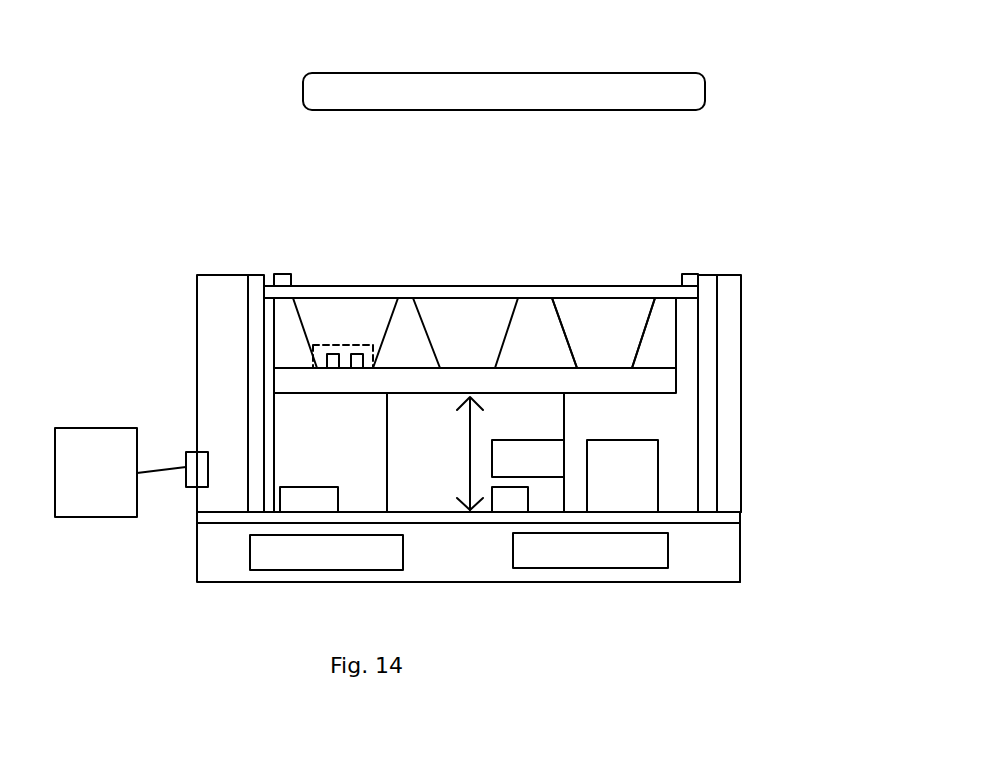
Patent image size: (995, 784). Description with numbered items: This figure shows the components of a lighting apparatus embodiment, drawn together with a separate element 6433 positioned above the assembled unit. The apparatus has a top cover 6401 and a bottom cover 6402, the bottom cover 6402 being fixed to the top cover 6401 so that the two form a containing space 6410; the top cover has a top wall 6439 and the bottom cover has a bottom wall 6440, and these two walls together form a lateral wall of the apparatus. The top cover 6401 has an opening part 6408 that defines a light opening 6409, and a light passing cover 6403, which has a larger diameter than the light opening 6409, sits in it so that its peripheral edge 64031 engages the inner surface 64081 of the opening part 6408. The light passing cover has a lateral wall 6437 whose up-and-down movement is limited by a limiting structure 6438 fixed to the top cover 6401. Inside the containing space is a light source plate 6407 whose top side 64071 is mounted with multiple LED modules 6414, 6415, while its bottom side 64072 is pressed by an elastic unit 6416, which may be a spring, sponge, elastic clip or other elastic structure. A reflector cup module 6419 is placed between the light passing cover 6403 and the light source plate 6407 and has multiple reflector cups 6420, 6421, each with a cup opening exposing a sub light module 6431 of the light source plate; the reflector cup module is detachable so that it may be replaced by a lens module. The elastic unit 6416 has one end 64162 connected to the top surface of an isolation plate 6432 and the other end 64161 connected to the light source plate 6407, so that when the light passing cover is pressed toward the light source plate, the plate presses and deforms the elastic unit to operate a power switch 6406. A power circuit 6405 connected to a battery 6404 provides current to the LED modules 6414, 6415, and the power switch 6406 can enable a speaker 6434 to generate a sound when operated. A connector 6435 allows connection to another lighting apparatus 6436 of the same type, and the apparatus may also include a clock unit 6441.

The cover plate 6433 is at (406, 87).
The top cover 6401 is at (202, 314).
The bottom cover 6402 is at (225, 563).
The light passing cover 6403 is at (623, 297).
The lateral wall 6437 is at (694, 290).
The limiting structure 6438 is at (715, 302).
The opening part 6408 is at (287, 275).
The inner surface 64081 is at (279, 287).
The light opening 6409 is at (298, 280).
The peripheral edge 64031 is at (268, 300).
The light source plate 6407 is at (672, 379).
The reflector cup 6420 is at (365, 317).
The reflector cup 6421 is at (465, 317).
The reflector cup module 6419 is at (537, 320).
The top side 64071 is at (632, 368).
The bottom side 64072 is at (655, 395).
The sub light module 6431 is at (347, 352).
The LED module 6414 is at (332, 362).
The LED module 6415 is at (362, 368).
The containing space 6410 is at (287, 447).
The elastic unit 6416 is at (427, 488).
The other end 64161 is at (410, 393).
The one end 64162 is at (408, 508).
The power switch 6406 is at (565, 445).
The clock unit 6441 is at (507, 505).
The power circuit 6405 is at (647, 478).
The battery 6404 is at (563, 560).
The speaker 6434 is at (296, 504).
The another lighting apparatus 6436 is at (63, 510).
The connector 6435 is at (190, 458).
The top wall 6439 is at (738, 483).
The isolation plate 6432 is at (728, 517).
The bottom wall 6440 is at (732, 562).